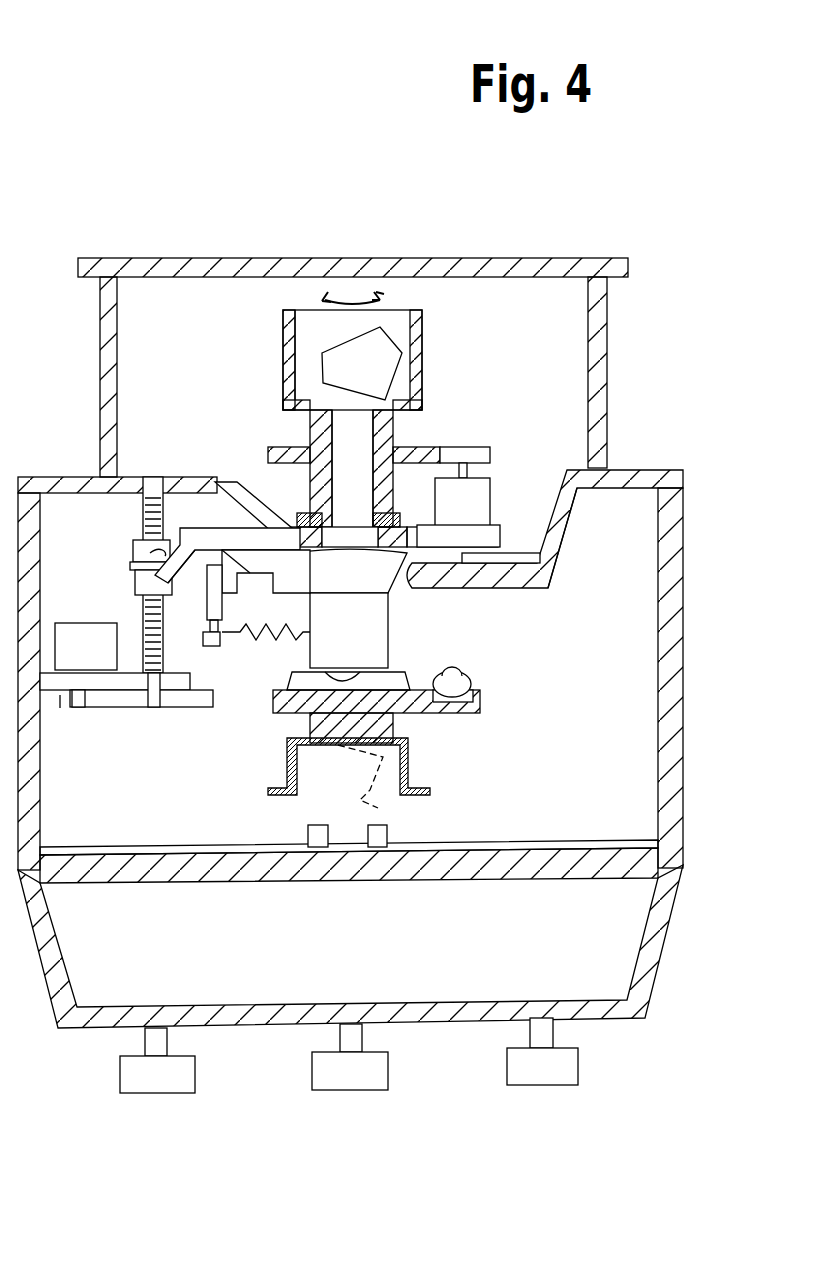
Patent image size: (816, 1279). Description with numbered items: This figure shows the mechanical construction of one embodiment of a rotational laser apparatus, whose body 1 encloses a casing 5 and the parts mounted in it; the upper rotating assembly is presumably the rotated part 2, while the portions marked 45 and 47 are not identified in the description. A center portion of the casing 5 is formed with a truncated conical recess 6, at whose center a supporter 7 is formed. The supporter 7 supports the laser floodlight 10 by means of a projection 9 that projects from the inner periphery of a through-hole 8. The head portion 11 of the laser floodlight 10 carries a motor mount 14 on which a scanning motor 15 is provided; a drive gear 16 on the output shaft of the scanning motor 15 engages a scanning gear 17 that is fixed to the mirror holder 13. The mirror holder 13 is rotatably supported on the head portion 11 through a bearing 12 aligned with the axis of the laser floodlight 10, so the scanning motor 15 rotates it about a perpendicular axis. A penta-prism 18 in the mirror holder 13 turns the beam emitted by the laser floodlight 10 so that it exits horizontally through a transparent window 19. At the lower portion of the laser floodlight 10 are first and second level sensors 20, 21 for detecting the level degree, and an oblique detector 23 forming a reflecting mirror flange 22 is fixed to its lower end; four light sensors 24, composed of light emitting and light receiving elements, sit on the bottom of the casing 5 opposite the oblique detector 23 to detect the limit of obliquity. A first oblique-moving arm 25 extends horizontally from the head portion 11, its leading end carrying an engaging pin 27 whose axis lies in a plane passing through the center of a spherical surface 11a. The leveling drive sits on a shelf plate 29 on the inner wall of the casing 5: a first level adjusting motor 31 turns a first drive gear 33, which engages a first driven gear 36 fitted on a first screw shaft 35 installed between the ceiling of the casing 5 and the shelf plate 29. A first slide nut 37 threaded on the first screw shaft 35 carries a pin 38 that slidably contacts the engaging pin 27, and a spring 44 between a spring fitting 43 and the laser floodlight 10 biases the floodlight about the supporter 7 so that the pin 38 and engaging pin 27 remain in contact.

The body 1 is at (622, 304).
The rotary processing unit 2 is at (430, 302).
The casing 5 is at (650, 469).
The truncated conical recess 6 is at (535, 492).
The supporter 7 is at (540, 560).
The through-hole 8 is at (283, 592).
The projection 9 is at (398, 590).
The laser floodlight 10 is at (388, 616).
The head portion 11 is at (400, 515).
The spherical surface 11a is at (272, 528).
The bearing 12 is at (272, 478).
The mirror holder 13 is at (422, 332).
The motor mount 14 is at (543, 520).
The scanning motor 15 is at (508, 485).
The drive gear 16 is at (463, 447).
The scanning gear 17 is at (418, 447).
The penta-prism 18 is at (326, 382).
The transparent window 19 is at (283, 365).
The first level sensor 20 is at (300, 674).
The second level sensor 21 is at (463, 674).
The reflecting mirror flange 22 is at (287, 792).
The oblique detector 23 is at (408, 758).
The light sensors 24 is at (308, 832).
The first oblique-moving arm 25 is at (232, 480).
The engaging pin 27 is at (135, 576).
The shelf plate 29 is at (60, 708).
The first level adjusting motor 31 is at (70, 634).
The first drive gear 33 is at (82, 705).
The first screw shaft 35 is at (168, 638).
The first driven gear 36 is at (163, 708).
The first slide nut 37 is at (142, 538).
The pin 38 is at (165, 555).
The spring fitting 43 is at (205, 586).
The spring 44 is at (273, 702).
The base pan 45 is at (80, 1030).
The side wall 47 is at (607, 363).